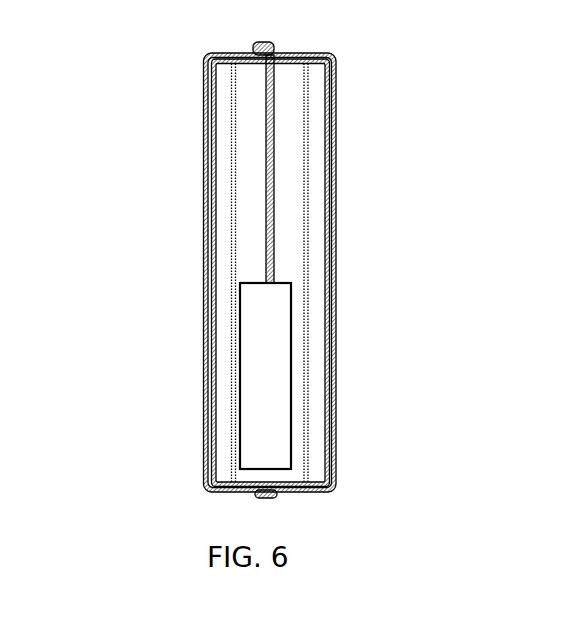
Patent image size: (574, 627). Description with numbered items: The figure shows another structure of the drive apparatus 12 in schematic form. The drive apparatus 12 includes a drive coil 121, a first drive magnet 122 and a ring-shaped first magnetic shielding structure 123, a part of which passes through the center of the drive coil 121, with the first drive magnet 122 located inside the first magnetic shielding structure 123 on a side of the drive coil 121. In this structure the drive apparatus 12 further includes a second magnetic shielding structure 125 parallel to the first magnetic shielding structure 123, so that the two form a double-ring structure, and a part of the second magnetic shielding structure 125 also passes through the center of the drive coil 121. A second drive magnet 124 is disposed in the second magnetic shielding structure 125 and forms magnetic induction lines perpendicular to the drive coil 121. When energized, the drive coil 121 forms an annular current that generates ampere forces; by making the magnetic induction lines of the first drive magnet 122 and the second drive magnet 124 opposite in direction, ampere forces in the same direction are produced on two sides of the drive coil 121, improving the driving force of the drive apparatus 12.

The drive apparatus 12 is at (116, 83).
The drive coil 121 is at (280, 369).
The first drive magnet 122 is at (217, 342).
The first magnetic shielding structure 123 is at (203, 195).
The second drive magnet 124 is at (315, 290).
The second magnetic shielding structure 125 is at (335, 182).